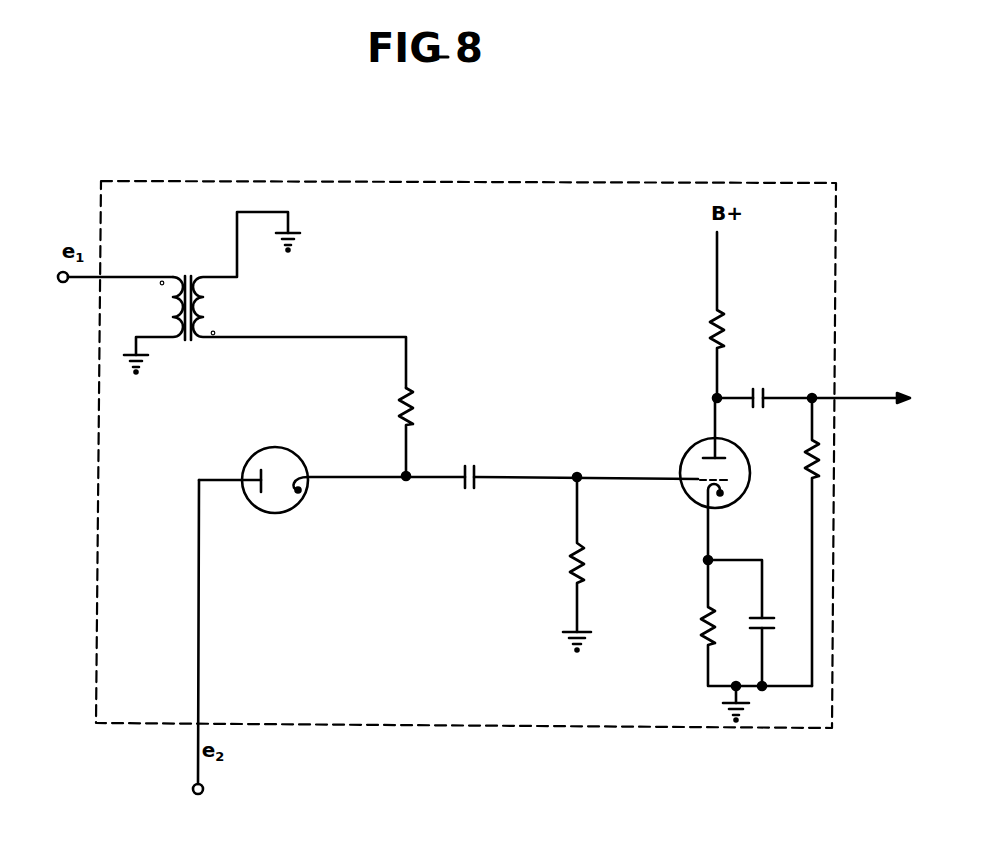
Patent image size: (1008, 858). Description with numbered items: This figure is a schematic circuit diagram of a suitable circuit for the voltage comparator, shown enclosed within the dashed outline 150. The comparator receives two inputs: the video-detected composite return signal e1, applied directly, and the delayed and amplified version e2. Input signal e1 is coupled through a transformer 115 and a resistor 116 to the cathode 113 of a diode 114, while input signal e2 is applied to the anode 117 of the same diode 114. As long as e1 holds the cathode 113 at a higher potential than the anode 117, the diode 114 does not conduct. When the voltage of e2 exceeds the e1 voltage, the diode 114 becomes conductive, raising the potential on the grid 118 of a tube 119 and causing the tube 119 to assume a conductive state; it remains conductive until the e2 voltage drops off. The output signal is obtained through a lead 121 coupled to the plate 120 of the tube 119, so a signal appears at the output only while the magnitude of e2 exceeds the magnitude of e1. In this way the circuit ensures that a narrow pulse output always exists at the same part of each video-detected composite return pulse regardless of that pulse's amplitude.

The amplifier circuit enclosure 150 is at (401, 181).
The transformer 115 is at (188, 270).
The resistor 116 is at (409, 402).
The diode 114 is at (273, 499).
The anode 117 is at (256, 469).
The cathode 113 is at (303, 471).
The plate 120 is at (691, 477).
The tube 119 is at (703, 441).
The grid 118 is at (692, 491).
The lead 121 is at (862, 398).